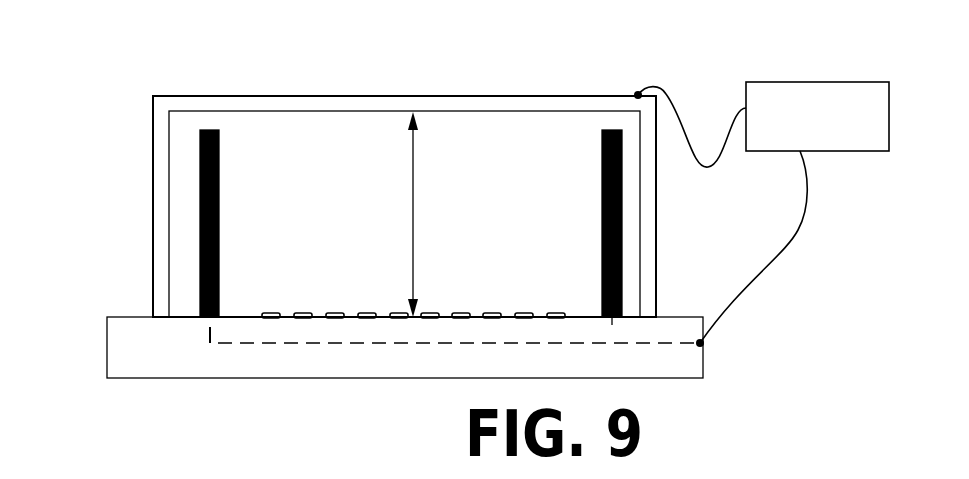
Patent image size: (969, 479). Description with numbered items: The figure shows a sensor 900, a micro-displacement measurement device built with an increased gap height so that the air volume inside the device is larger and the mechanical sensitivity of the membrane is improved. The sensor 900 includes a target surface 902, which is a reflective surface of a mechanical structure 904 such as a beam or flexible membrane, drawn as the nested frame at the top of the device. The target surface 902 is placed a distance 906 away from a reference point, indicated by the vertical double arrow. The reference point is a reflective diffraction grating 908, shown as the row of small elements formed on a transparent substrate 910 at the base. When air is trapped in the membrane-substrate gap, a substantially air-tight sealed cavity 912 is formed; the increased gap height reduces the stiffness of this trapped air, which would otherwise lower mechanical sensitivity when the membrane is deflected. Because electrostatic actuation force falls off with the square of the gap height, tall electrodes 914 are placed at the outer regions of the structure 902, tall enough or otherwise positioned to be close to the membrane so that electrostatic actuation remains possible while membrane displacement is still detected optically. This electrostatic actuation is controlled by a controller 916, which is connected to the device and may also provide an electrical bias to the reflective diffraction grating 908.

The sensor 900 is at (137, 56).
The target surface 902 is at (348, 112).
The mechanical structure 904 is at (298, 95).
The distance 906 is at (413, 232).
The reflective diffraction grating 908 is at (322, 288).
The transparent substrate 910 is at (142, 360).
The sealed cavity 912 is at (470, 258).
The tall electrodes 914 is at (219, 223).
The controller 916 is at (800, 140).